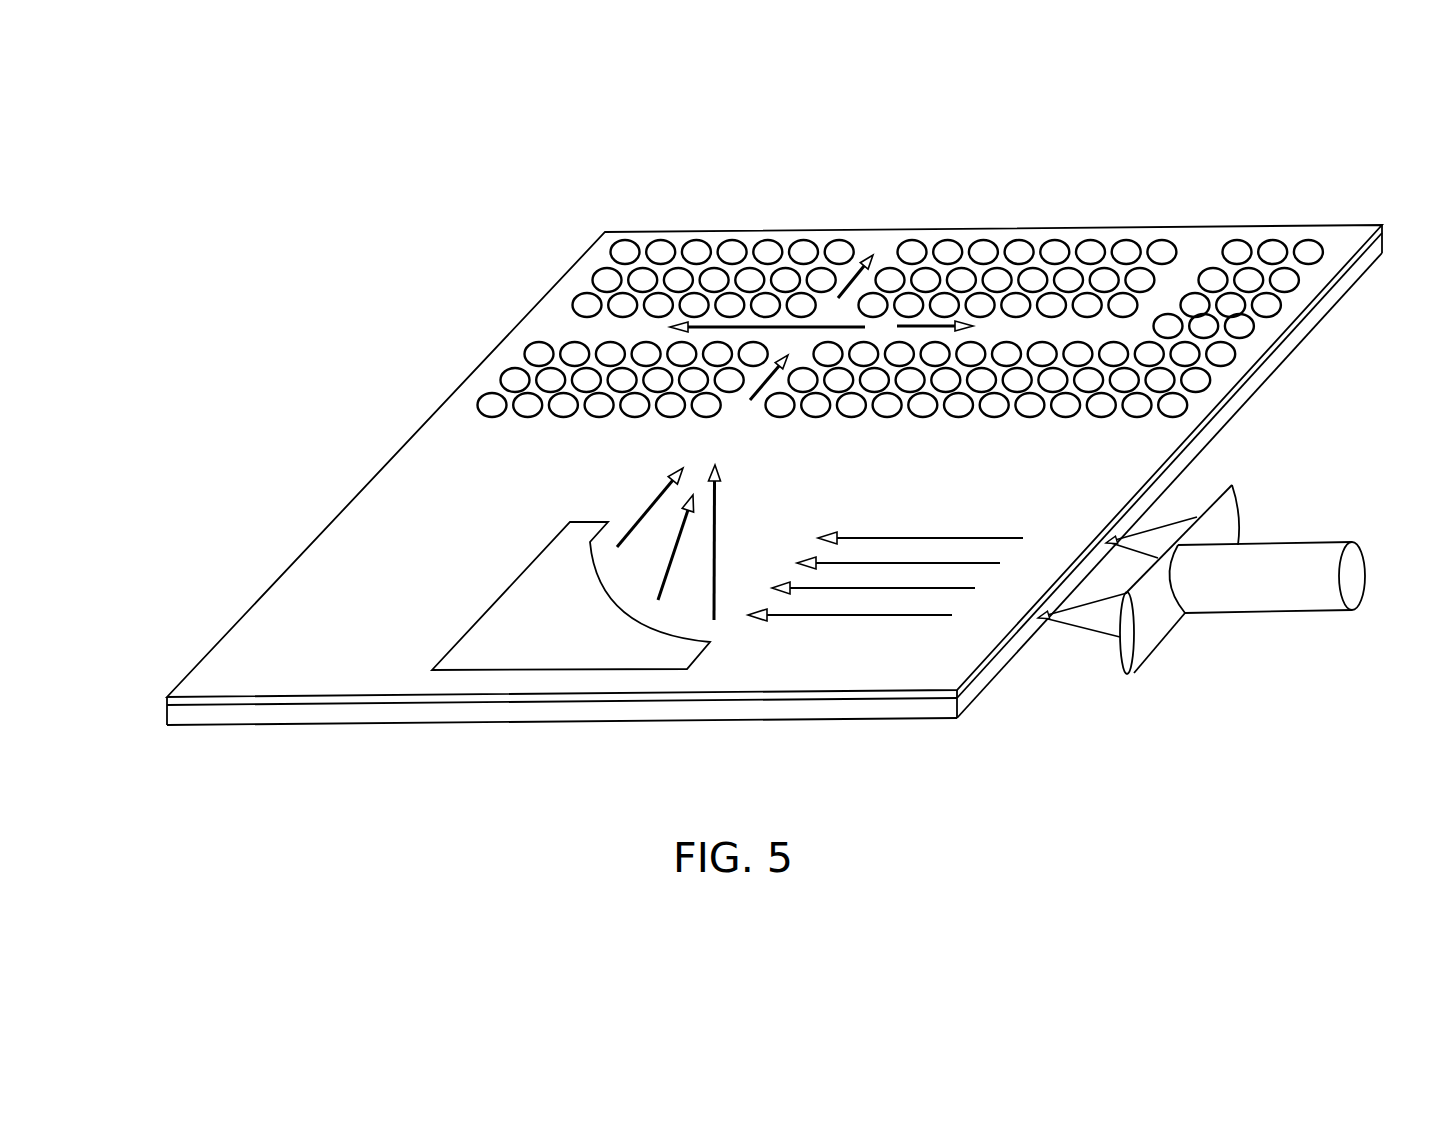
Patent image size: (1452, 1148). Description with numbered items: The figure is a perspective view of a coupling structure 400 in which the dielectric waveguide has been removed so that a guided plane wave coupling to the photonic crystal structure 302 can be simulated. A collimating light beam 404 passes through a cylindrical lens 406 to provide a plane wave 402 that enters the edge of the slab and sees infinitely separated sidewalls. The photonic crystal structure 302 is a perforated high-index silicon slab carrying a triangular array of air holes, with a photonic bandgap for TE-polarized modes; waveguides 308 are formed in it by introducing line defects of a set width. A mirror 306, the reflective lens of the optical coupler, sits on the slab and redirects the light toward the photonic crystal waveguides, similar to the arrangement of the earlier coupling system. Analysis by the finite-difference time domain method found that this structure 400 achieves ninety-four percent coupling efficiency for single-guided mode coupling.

The structure 400 is at (1024, 164).
The photonic crystal structure 302 is at (1290, 297).
The waveguides 308 is at (873, 247).
The mirror 306 is at (478, 648).
The plane wave 402 is at (662, 495).
The collimating light beam 404 is at (1285, 562).
The cylindrical lens 406 is at (1223, 513).